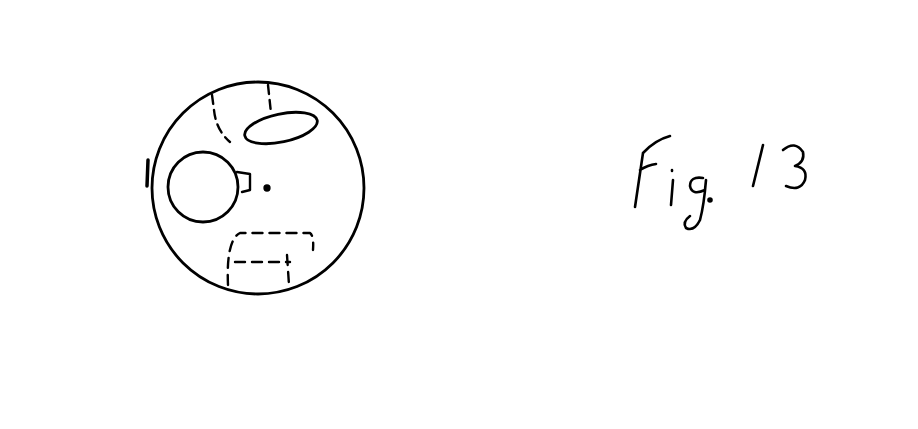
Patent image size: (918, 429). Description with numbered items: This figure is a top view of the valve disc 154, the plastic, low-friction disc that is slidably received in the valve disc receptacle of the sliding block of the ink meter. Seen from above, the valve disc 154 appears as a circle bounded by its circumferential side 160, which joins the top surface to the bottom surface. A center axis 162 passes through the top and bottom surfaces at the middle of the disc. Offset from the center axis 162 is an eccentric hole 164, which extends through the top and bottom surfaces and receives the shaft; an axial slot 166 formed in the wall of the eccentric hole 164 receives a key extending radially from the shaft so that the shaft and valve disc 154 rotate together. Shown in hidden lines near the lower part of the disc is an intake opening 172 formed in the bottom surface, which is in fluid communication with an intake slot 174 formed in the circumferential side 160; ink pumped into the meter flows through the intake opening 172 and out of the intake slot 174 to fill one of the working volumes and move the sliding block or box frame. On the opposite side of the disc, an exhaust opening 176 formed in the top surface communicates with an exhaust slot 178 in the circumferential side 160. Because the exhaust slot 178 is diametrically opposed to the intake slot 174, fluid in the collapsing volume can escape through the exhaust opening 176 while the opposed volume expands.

The valve disc 154 is at (542, 92).
The circumferential side 160 is at (417, 203).
The center axis 162 is at (302, 178).
The eccentric hole 164 is at (167, 180).
The axial slot 166 is at (245, 170).
The intake opening 172 is at (357, 288).
The intake slot 174 is at (290, 322).
The exhaust opening 176 is at (350, 75).
The exhaust slot 178 is at (255, 82).